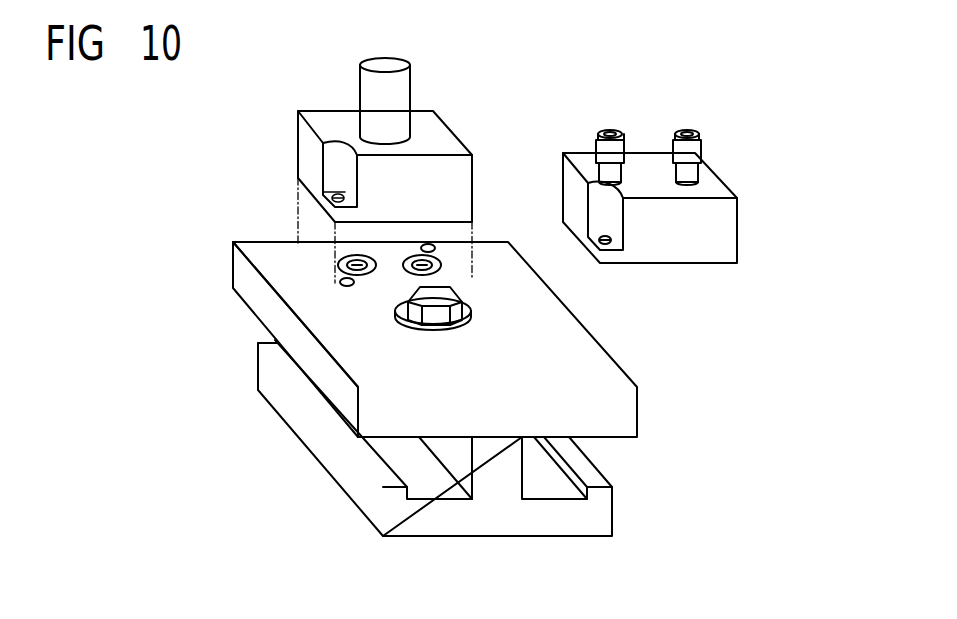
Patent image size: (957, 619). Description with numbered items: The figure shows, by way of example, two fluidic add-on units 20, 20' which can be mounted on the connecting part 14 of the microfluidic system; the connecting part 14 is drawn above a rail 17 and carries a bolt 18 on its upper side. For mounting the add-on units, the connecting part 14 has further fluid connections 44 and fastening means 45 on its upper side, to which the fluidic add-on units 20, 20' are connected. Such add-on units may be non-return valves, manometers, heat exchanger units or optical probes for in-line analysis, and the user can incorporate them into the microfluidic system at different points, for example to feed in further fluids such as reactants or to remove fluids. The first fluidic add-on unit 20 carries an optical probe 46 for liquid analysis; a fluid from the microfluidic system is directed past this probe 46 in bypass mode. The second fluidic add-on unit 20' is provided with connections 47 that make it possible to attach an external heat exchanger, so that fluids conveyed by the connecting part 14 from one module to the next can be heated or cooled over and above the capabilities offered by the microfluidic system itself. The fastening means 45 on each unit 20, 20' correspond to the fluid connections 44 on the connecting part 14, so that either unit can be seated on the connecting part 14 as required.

The connecting part 14 is at (625, 417).
The guide rail 17 is at (600, 520).
The fastening bolt 18 is at (445, 291).
The fluidic add-on unit 20 is at (340, 186).
The fluidic add-on unit 20' is at (704, 208).
The further fluid connections 44 is at (340, 265).
The fastening means 45 is at (338, 192).
The optical probe 46 is at (397, 90).
The connections 47 is at (687, 130).